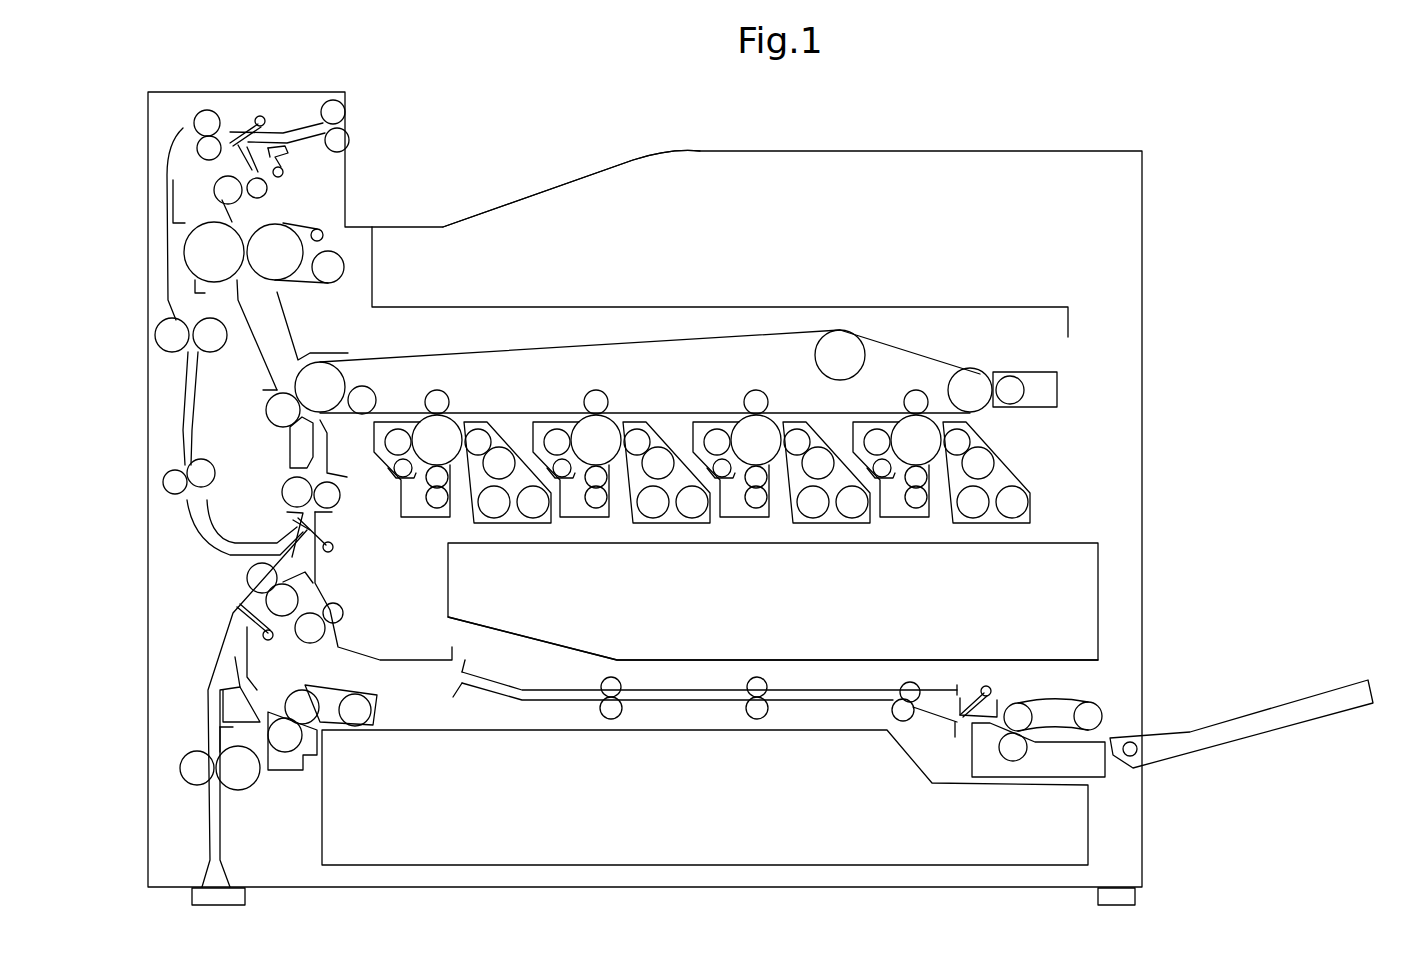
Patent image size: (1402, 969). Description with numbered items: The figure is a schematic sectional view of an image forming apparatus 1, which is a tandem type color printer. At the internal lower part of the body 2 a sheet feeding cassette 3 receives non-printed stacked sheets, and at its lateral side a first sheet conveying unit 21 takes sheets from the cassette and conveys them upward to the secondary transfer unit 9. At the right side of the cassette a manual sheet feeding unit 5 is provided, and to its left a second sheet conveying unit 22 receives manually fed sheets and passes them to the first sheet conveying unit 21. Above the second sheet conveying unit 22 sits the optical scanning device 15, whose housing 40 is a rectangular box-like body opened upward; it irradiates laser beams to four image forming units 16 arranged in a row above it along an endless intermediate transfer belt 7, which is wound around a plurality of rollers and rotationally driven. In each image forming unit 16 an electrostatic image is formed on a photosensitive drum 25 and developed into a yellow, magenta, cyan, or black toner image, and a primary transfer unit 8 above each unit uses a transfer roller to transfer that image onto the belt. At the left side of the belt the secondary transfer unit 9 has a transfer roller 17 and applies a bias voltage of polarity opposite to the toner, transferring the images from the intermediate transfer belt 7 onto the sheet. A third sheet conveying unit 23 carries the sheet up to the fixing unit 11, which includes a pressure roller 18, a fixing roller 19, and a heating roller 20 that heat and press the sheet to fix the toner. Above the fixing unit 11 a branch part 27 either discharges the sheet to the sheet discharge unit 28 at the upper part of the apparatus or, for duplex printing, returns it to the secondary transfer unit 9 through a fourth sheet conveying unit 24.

The image forming apparatus 1 is at (731, 119).
The body 2 is at (1055, 151).
The sheet feeding cassette 3 is at (548, 866).
The manual sheet feeding unit 5 is at (1292, 701).
The intermediate transfer belt 7 is at (650, 345).
The primary transfer unit 8 is at (437, 390).
The secondary transfer unit 9 is at (272, 438).
The fixing unit 11 is at (178, 241).
The optical scanning device 15 is at (1100, 575).
The image forming unit 16 is at (460, 400).
The transfer roller 17 is at (268, 408).
The pressure roller 18 is at (185, 264).
The fixing roller 19 is at (286, 226).
The heating roller 20 is at (345, 268).
The first sheet conveying unit 21 is at (230, 610).
The second sheet conveying unit 22 is at (686, 705).
The third sheet conveying unit 23 is at (299, 330).
The fourth sheet conveying unit 24 is at (180, 392).
The photosensitive drum 25 is at (614, 416).
The branch part 27 is at (288, 162).
The sheet discharge unit 28 is at (548, 178).
The housing 40 is at (1100, 591).